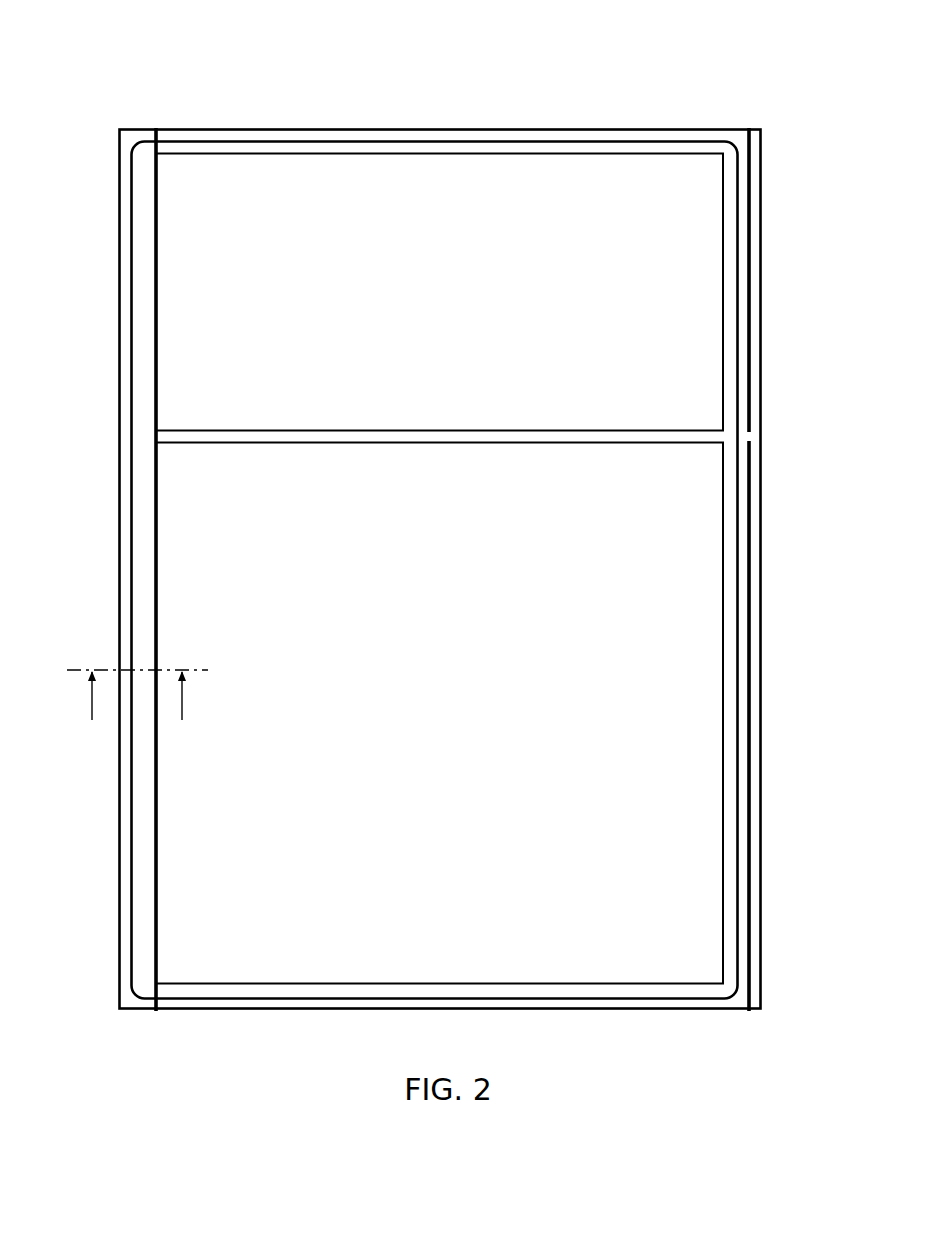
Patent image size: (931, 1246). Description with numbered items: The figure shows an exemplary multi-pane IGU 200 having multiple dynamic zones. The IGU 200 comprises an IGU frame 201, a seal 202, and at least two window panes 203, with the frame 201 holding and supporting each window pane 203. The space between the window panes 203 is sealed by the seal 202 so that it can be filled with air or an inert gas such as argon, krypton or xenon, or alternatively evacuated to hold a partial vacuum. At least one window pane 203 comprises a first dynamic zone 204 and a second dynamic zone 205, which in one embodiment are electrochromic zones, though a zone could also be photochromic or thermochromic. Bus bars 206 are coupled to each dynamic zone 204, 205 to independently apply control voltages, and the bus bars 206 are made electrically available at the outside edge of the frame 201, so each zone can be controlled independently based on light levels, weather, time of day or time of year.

The multi-pane IGU 200 is at (143, 64).
The IGU frame 201 is at (295, 128).
The seal 202 is at (405, 140).
The window pane 203 is at (520, 217).
The first dynamic zone 204 is at (439, 292).
The second dynamic zone 205 is at (439, 713).
The bus bars 206 is at (155, 203).